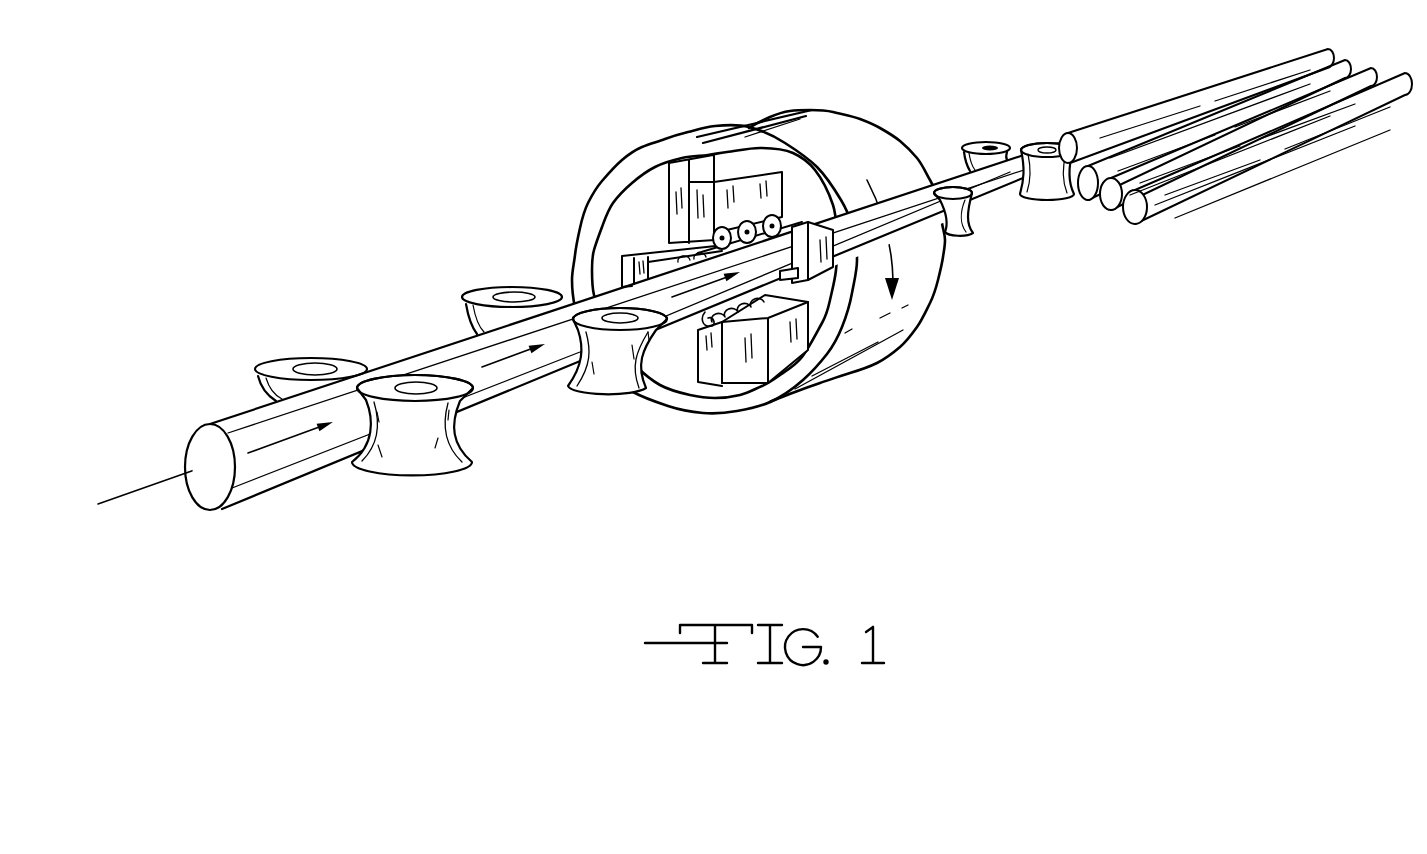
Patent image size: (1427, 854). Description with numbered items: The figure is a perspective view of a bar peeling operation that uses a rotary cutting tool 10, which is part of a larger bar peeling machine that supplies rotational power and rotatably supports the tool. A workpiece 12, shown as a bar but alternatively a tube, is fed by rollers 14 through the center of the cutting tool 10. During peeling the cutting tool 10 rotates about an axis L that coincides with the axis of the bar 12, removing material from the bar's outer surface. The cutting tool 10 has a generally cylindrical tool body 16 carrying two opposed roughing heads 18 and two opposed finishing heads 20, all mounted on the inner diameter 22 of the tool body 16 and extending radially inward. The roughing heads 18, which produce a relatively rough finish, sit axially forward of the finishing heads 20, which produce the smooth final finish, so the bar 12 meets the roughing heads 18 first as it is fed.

The rotary cutting tool 10 is at (755, 300).
The workpiece 12 is at (447, 357).
The rollers 14 is at (411, 460).
The tool body 16 is at (818, 133).
The roughing head 18 is at (689, 183).
The finishing head 20 is at (630, 270).
The inner diameter 22 is at (633, 208).
The axis L is at (138, 490).